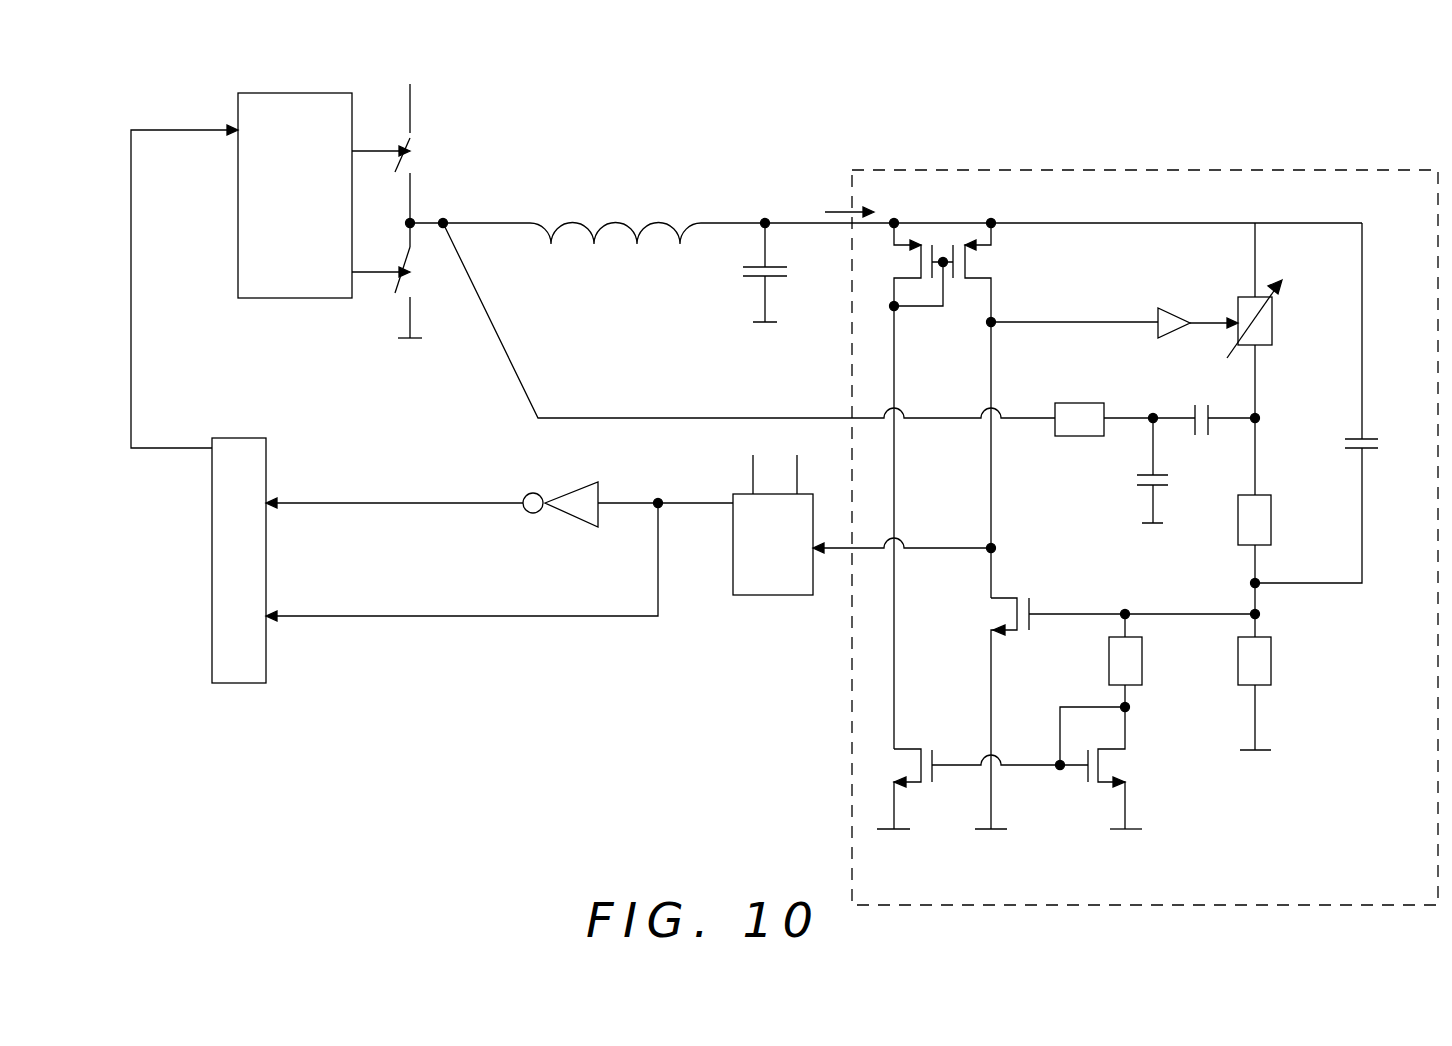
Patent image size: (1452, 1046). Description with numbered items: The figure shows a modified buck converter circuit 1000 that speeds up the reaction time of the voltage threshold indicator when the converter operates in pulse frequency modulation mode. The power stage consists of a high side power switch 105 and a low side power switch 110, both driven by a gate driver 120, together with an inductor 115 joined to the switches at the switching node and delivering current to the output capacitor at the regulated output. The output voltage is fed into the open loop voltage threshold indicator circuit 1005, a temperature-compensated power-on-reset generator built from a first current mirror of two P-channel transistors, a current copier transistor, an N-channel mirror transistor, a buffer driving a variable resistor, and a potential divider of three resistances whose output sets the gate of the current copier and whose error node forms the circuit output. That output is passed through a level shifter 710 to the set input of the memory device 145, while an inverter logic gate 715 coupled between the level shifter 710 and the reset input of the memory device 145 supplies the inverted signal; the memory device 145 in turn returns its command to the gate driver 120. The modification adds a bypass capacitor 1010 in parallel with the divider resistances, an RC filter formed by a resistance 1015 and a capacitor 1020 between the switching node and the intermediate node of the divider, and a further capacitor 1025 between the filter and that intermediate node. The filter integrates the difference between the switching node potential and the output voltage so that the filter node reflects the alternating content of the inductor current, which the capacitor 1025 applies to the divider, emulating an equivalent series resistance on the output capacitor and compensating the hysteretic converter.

The power converter circuit 1000 is at (562, 673).
The gate driver 120 is at (313, 93).
The high side power switch 105 is at (430, 140).
The low side power switch 110 is at (420, 288).
The inductor 115 is at (627, 217).
The current sensing circuit 1005 is at (1020, 170).
The bypass capacitor 1010 is at (1343, 440).
The resistance R1 1015 is at (1093, 403).
The capacitor C1 1020 is at (1233, 398).
The capacitor CAC 1025 is at (1158, 492).
The memory device 145 is at (253, 438).
The inverter logic gate 715 is at (573, 484).
The level shifter 710 is at (795, 595).